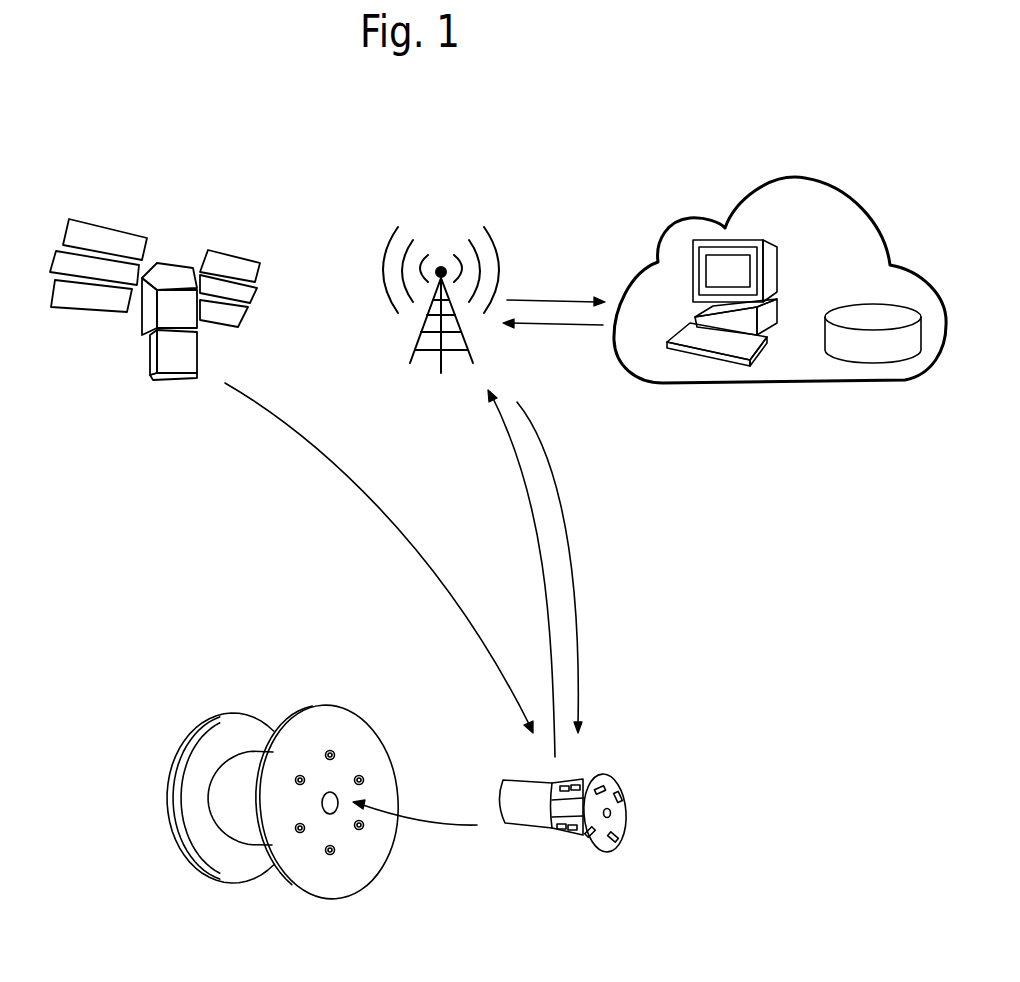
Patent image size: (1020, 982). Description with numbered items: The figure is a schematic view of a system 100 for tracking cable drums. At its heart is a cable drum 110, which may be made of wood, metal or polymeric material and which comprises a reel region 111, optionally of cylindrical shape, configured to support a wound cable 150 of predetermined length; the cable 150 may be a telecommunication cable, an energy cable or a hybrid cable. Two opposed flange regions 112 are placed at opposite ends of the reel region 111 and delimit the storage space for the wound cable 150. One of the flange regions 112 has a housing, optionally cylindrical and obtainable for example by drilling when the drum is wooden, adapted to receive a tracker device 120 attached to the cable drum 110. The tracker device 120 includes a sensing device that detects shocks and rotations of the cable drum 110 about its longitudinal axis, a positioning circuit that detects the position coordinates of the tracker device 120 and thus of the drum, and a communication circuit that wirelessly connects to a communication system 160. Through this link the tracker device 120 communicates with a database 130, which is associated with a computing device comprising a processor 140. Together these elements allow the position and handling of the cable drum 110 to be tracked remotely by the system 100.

The system for tracking cable drums 100 is at (743, 585).
The cable drum 110 is at (280, 680).
The reel region 111 is at (237, 892).
The flange region 112 is at (293, 880).
The tracker device 120 is at (617, 850).
The database 130 is at (863, 303).
The processor 140 is at (729, 245).
The wound cable 150 is at (228, 810).
The communication system 160 is at (503, 233).